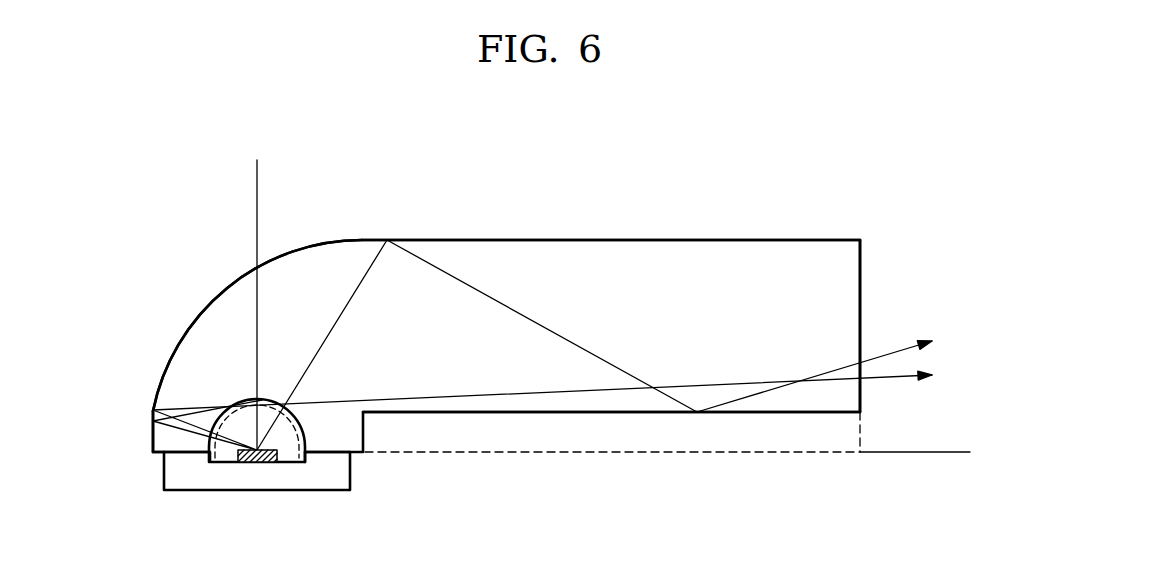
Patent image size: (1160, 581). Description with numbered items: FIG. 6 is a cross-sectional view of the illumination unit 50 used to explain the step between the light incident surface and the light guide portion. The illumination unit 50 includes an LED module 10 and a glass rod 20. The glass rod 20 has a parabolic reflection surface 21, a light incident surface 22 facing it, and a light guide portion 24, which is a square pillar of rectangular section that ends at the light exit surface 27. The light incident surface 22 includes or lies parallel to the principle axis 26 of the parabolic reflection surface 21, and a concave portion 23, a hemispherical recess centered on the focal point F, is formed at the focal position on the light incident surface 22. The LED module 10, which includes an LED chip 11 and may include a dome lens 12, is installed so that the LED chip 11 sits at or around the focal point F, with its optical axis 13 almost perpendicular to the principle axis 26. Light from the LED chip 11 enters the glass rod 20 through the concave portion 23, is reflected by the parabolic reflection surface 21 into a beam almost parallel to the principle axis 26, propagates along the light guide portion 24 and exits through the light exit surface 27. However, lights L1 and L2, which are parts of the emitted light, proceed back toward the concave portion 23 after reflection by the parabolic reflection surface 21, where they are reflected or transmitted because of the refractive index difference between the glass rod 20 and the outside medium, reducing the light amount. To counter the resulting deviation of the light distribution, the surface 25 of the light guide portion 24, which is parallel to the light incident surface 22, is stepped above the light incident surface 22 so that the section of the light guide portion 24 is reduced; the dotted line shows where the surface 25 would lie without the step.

The LED module 10 is at (164, 470).
The LED chip 11 is at (262, 447).
The dome lens 12 is at (307, 440).
The optical axis 13 is at (257, 247).
The glass rod 20 is at (747, 240).
The parabolic reflection surface 21 is at (192, 318).
The light incident surface 22 is at (157, 454).
The concave portion 23 is at (153, 421).
The light guide portion 24 is at (613, 238).
The surface of the light guide portion 25 is at (613, 413).
The principle axis 26 is at (915, 453).
The light exit surface 27 is at (863, 257).
The illumination unit 50 is at (587, 178).
The focal point F is at (258, 445).
The light L1 is at (462, 262).
The light L2 is at (403, 398).